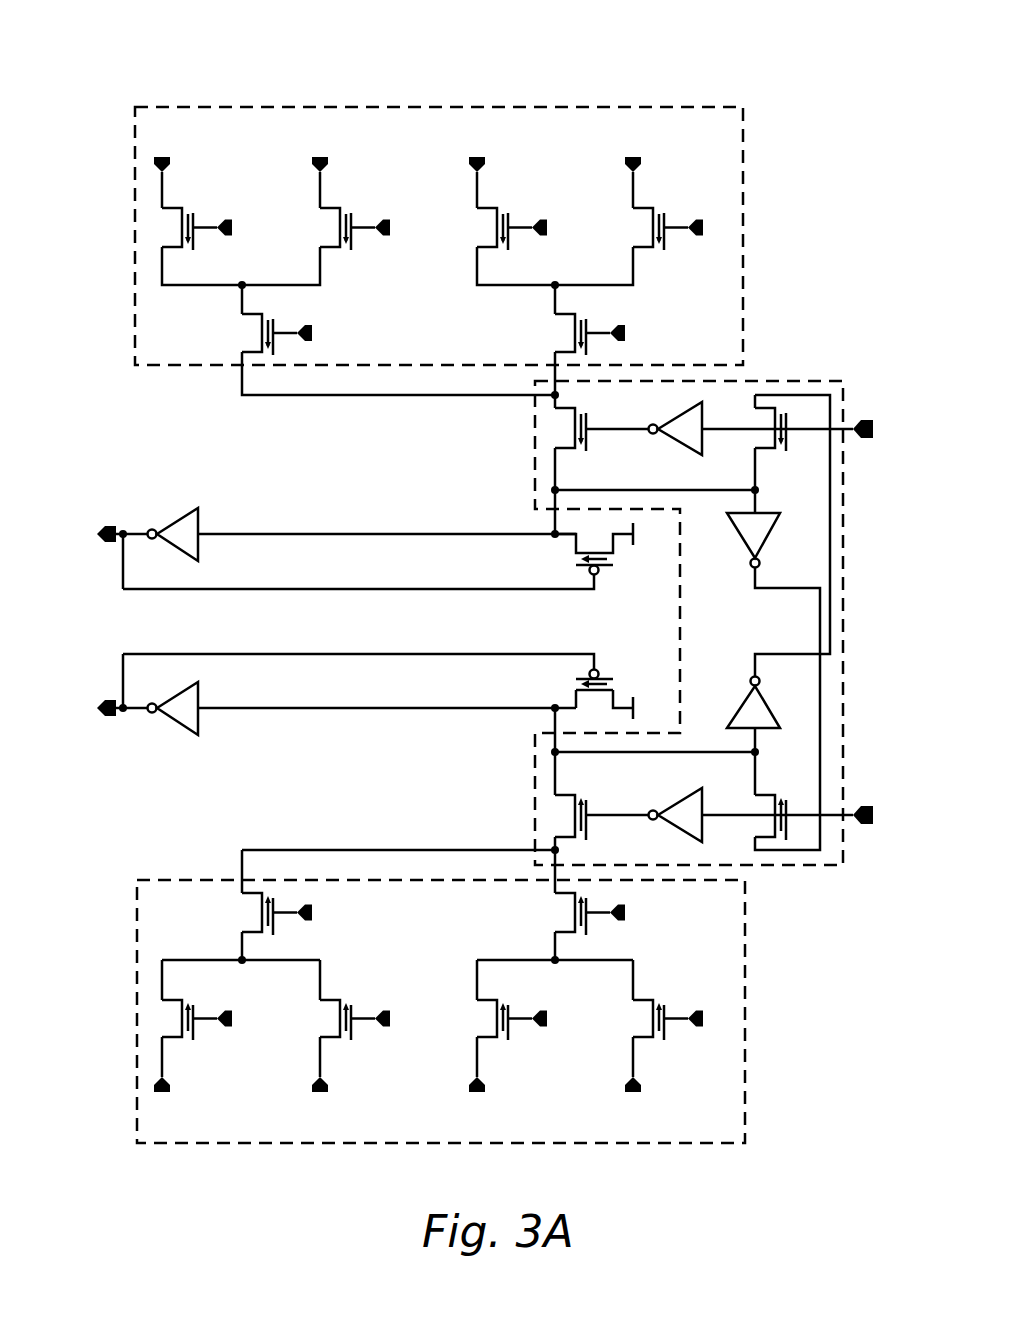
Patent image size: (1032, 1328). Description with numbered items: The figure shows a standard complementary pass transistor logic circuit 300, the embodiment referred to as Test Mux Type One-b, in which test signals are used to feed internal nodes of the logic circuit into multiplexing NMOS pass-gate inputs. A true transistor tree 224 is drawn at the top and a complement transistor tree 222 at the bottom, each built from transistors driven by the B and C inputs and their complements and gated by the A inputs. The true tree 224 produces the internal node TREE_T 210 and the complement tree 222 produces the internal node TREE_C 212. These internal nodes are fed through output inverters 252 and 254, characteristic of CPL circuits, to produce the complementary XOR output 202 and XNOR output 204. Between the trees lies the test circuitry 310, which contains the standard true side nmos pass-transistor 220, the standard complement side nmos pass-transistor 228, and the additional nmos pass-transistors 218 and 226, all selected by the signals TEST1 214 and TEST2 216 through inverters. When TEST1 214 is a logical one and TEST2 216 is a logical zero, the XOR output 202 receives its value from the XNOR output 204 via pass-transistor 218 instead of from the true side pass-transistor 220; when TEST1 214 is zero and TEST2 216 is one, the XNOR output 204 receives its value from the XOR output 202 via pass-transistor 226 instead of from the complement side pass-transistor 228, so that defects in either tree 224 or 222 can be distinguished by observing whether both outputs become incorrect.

The standard CPL circuit 300 is at (782, 52).
The true transistor tree 224 is at (688, 106).
The complement transistor tree 222 is at (700, 1143).
The test circuitry 310 is at (814, 382).
The TEST1 214 is at (890, 406).
The TEST2 216 is at (890, 794).
The nmos pass-transistor 218 is at (784, 455).
The true side nmos pass-transistor 220 is at (560, 430).
The nmos pass-transistor 226 is at (762, 822).
The complement side nmos pass-transistor 228 is at (560, 818).
The TREE_T 210 is at (306, 533).
The TREE_C 212 is at (306, 713).
The output inverter 252 is at (176, 486).
The output inverter 254 is at (168, 732).
The XOR output 202 is at (96, 553).
The XNOR output 204 is at (96, 729).